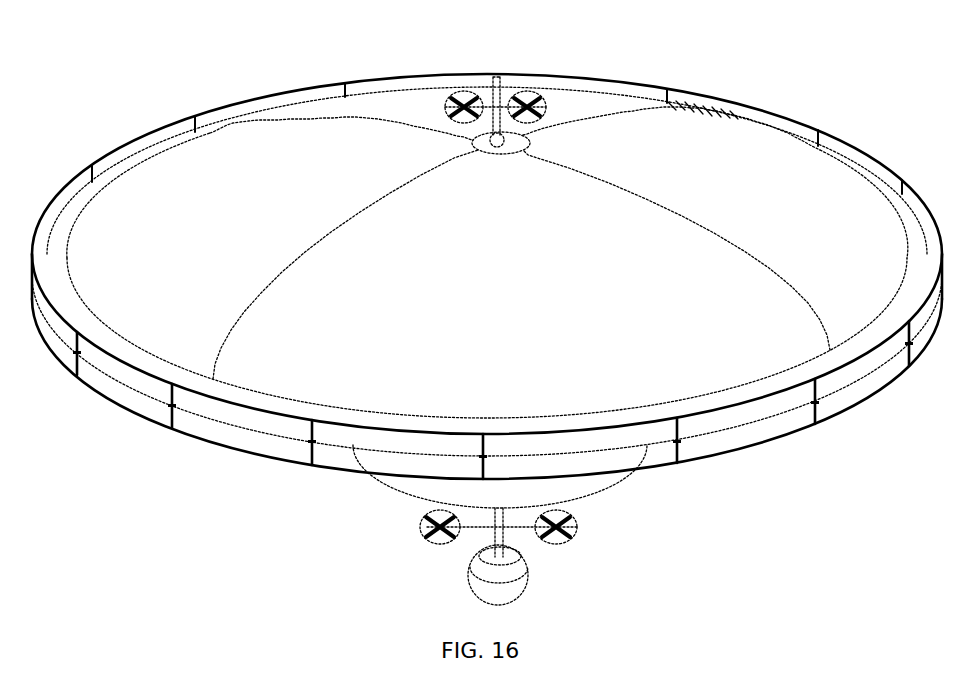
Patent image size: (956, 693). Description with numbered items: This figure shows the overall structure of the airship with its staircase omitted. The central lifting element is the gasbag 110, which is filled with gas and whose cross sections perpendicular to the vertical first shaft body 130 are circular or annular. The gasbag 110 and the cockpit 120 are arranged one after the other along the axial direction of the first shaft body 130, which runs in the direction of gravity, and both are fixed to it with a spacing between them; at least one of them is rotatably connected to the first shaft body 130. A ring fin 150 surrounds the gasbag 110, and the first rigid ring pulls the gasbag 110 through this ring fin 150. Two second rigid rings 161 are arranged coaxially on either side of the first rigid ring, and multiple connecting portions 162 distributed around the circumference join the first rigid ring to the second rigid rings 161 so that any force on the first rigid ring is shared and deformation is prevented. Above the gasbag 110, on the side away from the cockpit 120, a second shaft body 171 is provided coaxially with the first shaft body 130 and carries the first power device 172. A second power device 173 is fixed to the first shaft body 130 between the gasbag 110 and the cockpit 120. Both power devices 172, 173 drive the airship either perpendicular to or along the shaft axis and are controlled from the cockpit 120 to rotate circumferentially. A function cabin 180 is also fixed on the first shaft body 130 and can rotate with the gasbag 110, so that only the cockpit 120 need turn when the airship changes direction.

The gasbag 110 is at (647, 152).
The cockpit 120 is at (517, 573).
The first shaft body 130 is at (498, 538).
The ring fin 150 is at (913, 223).
The second rigid ring 161 is at (560, 72).
The connecting portion 162 is at (690, 108).
The second shaft body 171 is at (493, 80).
The first power device 172 is at (543, 103).
The second power device 173 is at (586, 527).
The function cabin 180 is at (567, 493).